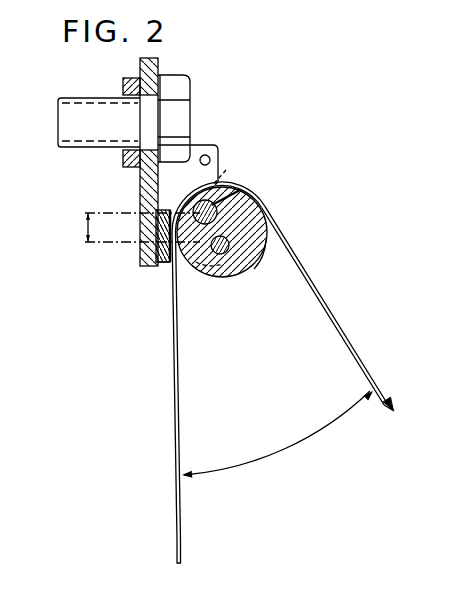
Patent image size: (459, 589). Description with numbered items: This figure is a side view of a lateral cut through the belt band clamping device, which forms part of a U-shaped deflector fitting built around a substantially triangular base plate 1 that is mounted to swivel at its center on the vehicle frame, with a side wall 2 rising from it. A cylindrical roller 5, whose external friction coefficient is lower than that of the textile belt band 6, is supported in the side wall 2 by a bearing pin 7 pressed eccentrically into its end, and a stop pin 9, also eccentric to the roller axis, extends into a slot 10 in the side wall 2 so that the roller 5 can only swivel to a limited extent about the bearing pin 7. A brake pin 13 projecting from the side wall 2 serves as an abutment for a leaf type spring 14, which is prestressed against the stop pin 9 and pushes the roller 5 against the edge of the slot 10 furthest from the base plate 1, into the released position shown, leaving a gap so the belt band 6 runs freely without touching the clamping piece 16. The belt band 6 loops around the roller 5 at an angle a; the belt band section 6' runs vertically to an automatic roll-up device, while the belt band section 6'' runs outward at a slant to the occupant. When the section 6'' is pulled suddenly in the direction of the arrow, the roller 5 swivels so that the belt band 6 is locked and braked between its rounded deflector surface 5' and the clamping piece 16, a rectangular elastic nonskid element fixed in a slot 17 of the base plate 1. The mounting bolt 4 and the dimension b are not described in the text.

The base plate 1 is at (148, 256).
The side wall 2 is at (170, 182).
The fastening bolt 4 is at (190, 108).
The cylindrical roller 5 is at (225, 251).
The rounded deflector surface 5' is at (269, 266).
The belt band 6 is at (163, 386).
The belt band section 6' is at (193, 546).
The belt band section 6'' is at (329, 308).
The bearing pin 7 is at (247, 187).
The stop pin 9 is at (228, 243).
The slot 10 is at (226, 279).
The brake pin 13 is at (218, 158).
The leaf type spring 14 is at (212, 167).
The clamping piece 16 is at (156, 230).
The slot 17 is at (160, 264).
The angle a is at (277, 434).
The dimension b is at (136, 227).